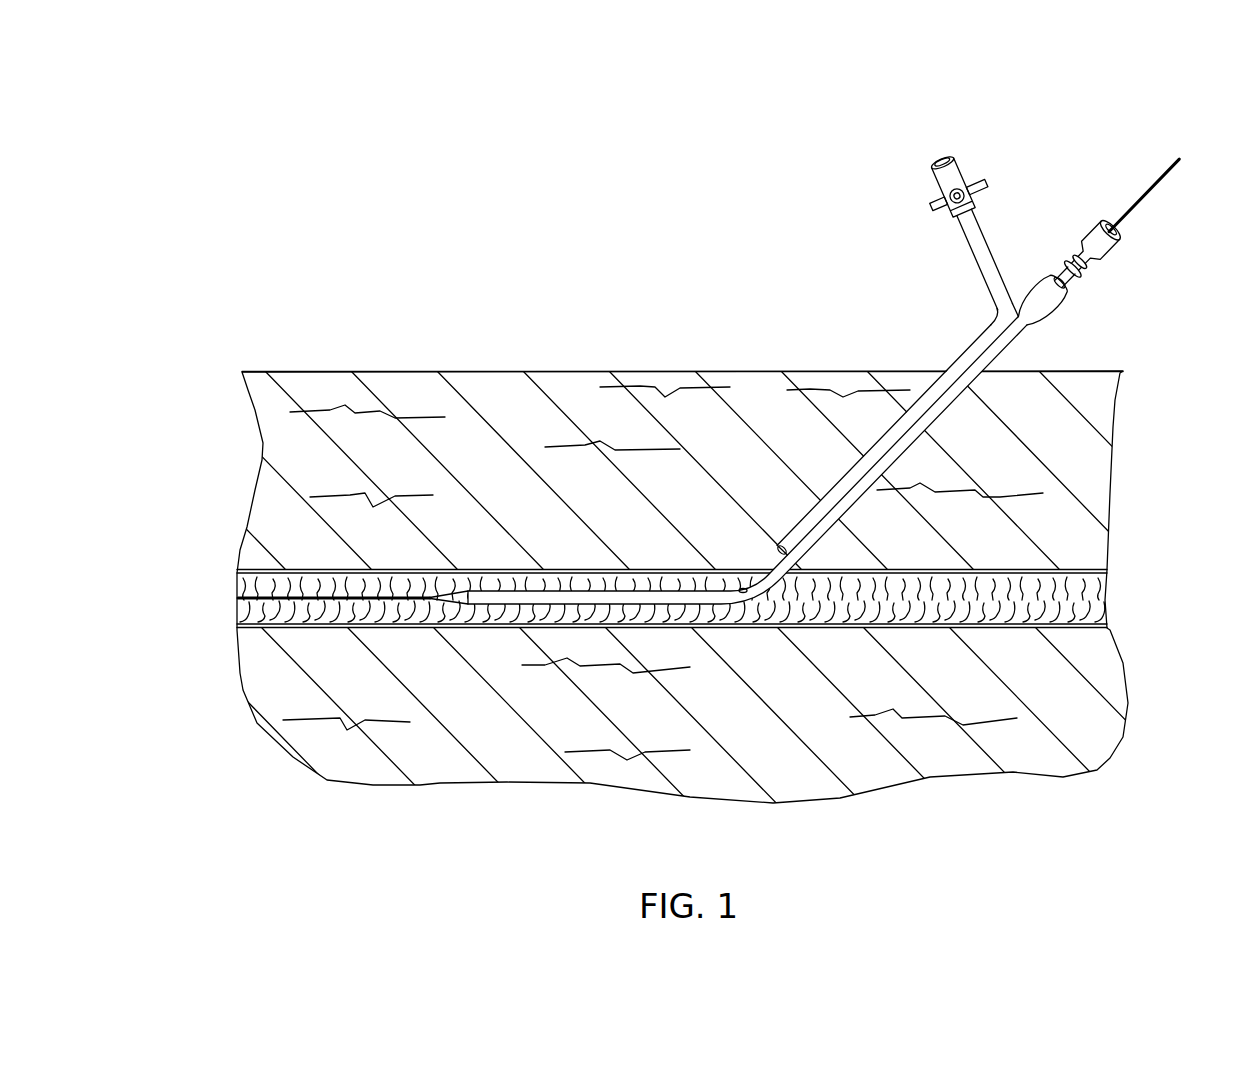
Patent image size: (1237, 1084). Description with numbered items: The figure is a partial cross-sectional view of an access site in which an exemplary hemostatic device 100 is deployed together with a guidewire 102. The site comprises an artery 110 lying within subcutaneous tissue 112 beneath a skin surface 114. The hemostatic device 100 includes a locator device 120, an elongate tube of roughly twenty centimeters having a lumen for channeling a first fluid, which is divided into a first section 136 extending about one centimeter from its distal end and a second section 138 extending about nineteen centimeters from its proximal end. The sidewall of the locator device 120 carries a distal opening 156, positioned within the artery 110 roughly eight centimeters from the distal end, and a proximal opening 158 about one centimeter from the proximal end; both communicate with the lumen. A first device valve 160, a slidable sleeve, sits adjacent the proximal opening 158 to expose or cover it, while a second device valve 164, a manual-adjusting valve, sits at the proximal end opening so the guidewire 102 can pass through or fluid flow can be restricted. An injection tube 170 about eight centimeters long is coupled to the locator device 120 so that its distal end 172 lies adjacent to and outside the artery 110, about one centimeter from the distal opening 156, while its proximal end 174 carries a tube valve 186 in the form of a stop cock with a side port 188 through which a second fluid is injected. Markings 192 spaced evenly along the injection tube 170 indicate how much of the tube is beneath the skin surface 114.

The hemostatic device 100 is at (1022, 126).
The guidewire 102 is at (263, 597).
The artery 110 is at (1105, 600).
The subcutaneous tissue 112 is at (557, 481).
The skin surface 114 is at (328, 371).
The locator device 120 is at (950, 435).
The first section 136 is at (437, 616).
The second section 138 is at (515, 574).
The distal opening 156 is at (768, 540).
The proximal opening 158 is at (1059, 283).
The first device valve 160 is at (1047, 295).
The second device valve 164 is at (1092, 249).
The injection tube 170 is at (985, 259).
The distal end 172 is at (746, 588).
The proximal end 174 is at (942, 162).
The tube valve 186 is at (958, 195).
The side port 188 is at (954, 187).
The markings 192 is at (984, 338).